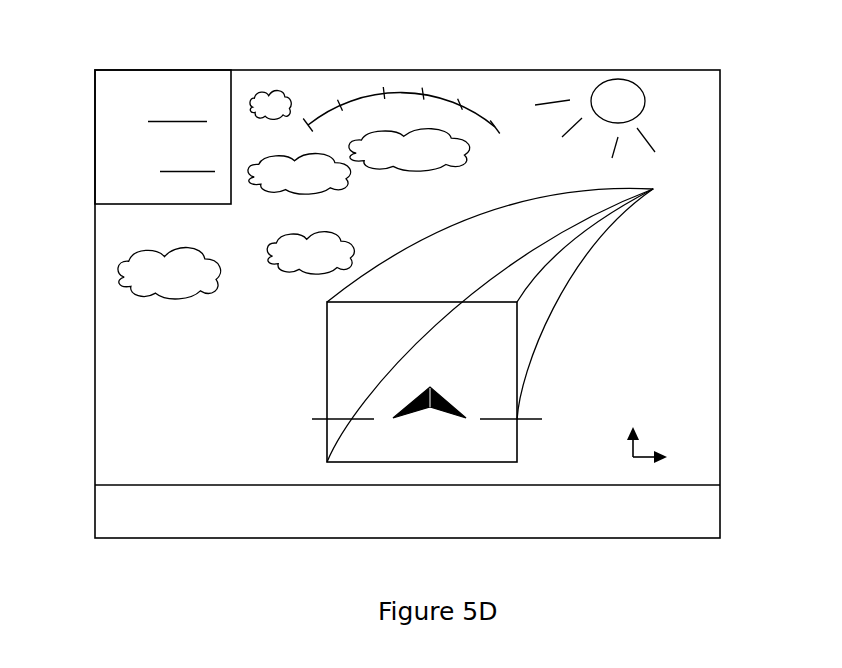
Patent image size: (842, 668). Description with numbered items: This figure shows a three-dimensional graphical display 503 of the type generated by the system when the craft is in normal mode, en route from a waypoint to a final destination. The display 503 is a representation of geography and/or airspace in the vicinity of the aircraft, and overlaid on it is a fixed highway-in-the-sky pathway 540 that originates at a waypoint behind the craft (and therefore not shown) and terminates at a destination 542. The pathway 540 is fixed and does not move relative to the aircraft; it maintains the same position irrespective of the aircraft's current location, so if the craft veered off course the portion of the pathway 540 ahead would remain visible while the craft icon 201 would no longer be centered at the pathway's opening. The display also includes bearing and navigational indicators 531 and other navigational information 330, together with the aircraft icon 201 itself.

The craft icon 201 is at (432, 327).
The navigational information 330 is at (95, 140).
The three-dimensional graphical display 503 is at (720, 202).
The bearing and navigational indicators 531 is at (657, 437).
The fixed HITS pathway 540 is at (548, 317).
The destination 542 is at (660, 187).